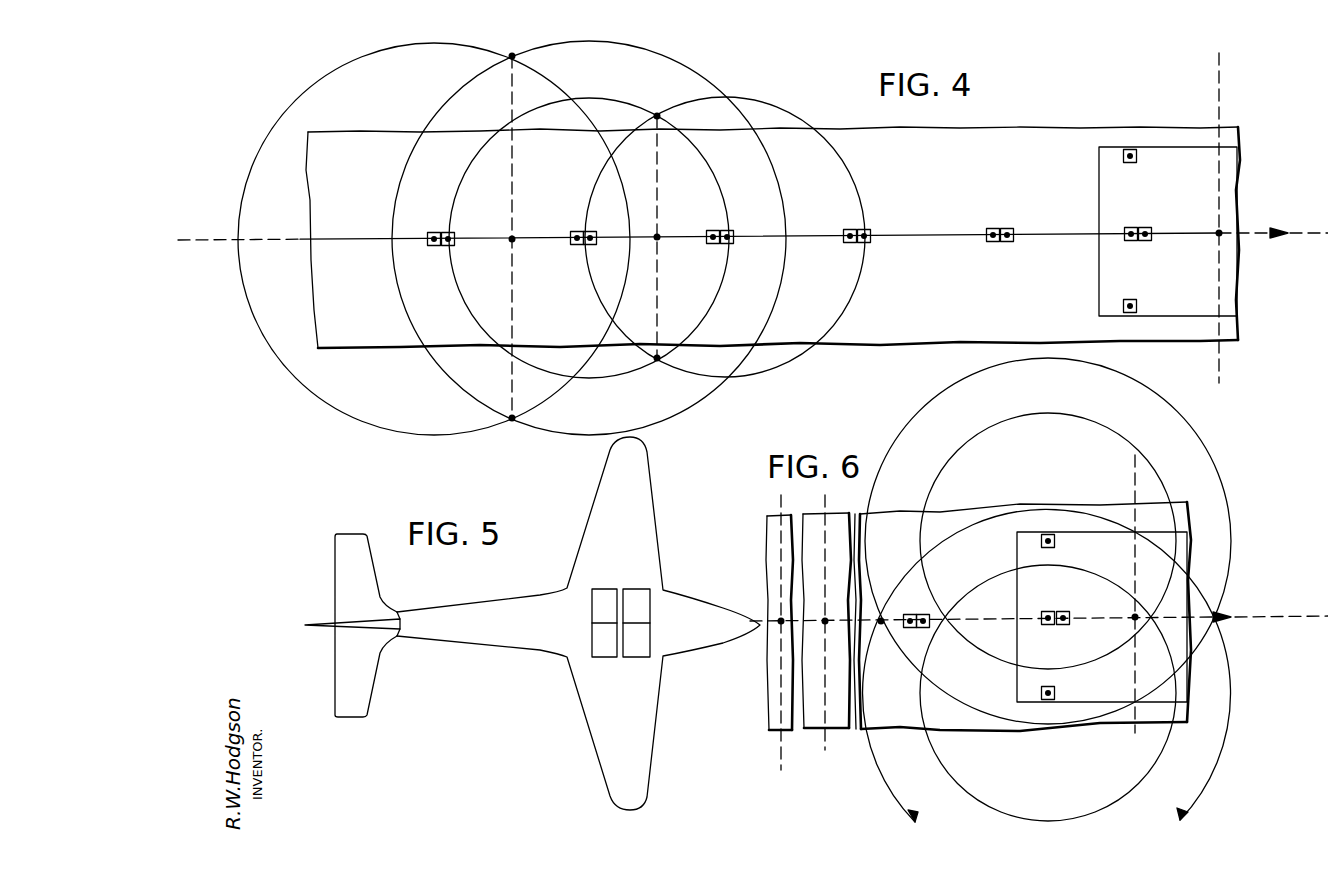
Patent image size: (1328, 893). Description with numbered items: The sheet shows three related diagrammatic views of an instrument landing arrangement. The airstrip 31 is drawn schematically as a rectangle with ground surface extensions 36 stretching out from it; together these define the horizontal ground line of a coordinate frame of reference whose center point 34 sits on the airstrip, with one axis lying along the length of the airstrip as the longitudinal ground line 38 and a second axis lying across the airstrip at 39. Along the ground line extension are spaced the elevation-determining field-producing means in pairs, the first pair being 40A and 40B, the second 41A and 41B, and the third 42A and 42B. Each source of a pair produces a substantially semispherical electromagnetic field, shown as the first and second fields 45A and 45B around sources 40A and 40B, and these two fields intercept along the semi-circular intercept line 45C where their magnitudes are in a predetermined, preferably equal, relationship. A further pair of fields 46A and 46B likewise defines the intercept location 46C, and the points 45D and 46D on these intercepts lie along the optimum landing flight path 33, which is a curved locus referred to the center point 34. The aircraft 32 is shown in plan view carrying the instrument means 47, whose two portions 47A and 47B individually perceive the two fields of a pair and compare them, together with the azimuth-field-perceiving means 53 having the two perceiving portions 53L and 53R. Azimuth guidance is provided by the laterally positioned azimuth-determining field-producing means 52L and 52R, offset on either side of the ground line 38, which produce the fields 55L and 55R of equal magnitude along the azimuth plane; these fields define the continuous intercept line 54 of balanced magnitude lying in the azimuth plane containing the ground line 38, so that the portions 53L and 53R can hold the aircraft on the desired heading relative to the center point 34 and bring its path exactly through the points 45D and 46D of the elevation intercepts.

In FIG. 4, the airstrip 31 is at (1167, 282).
In FIG. 6, the airstrip 31 is at (1083, 655).
In FIG. 5, the aircraft 32 is at (667, 720).
In FIG. 4, the optimum landing flight path 33 is at (684, 236).
In FIG. 4, the reference center point 34 is at (1219, 233).
In FIG. 6, the reference center point 34 is at (1133, 620).
In FIG. 4, the ground surface extensions 36 is at (967, 298).
In FIG. 6, the ground surface extensions 36 is at (979, 687).
In FIG. 4, the longitudinal ground line 38 is at (1305, 234).
In FIG. 6, the longitudinal ground line 38 is at (1210, 618).
In FIG. 4, the transverse axis 39 is at (1222, 102).
In FIG. 6, the transverse axis 39 is at (1133, 492).
In FIG. 4, the field-producing means 40A is at (434, 247).
In FIG. 4, the field-producing means 40B is at (589, 245).
In FIG. 4, the field-producing means 41A is at (576, 244).
In FIG. 4, the field-producing means 41B is at (728, 232).
In FIG. 4, the field-producing means 42A is at (713, 245).
In FIG. 4, the field-producing means 42B is at (866, 232).
In FIG. 4, the first electromagnetic field 45A is at (358, 59).
In FIG. 4, the second electromagnetic field 45B is at (595, 42).
In FIG. 4, the semi-circular intercept line 45C is at (513, 200).
In FIG. 4, the intersecting point 45D is at (513, 56).
In FIG. 6, the intersecting point 45D is at (781, 627).
In FIG. 4, the electromagnetic field 46A is at (468, 168).
In FIG. 6, the electromagnetic field 46A is at (783, 530).
In FIG. 4, the electromagnetic field 46B is at (830, 146).
In FIG. 4, the intercept location 46C is at (659, 192).
In FIG. 6, the intercept location 46C is at (827, 530).
In FIG. 4, the intersecting point 46D is at (657, 115).
In FIG. 6, the intersecting point 46D is at (825, 620).
In FIG. 5, the instrument means 47 is at (694, 587).
In FIG. 5, the perceiving portion 47A is at (643, 612).
In FIG. 5, the perceiving portion 47B is at (641, 650).
In FIG. 4, the azimuth-determining field-producing means 52L is at (1141, 156).
In FIG. 6, the azimuth-determining field-producing means 52L is at (1056, 541).
In FIG. 4, the azimuth-determining field-producing means 52R is at (1138, 305).
In FIG. 6, the azimuth-determining field-producing means 52R is at (1056, 693).
In FIG. 5, the azimuth-field-perceiving means 53 is at (525, 631).
In FIG. 5, the perceiving portion 53L is at (601, 594).
In FIG. 5, the perceiving portion 53R is at (608, 650).
In FIG. 6, the intercept locations 54 is at (912, 614).
In FIG. 6, the azimuth-determining field 55L is at (1187, 415).
In FIG. 6, the azimuth-determining field 55R is at (872, 751).